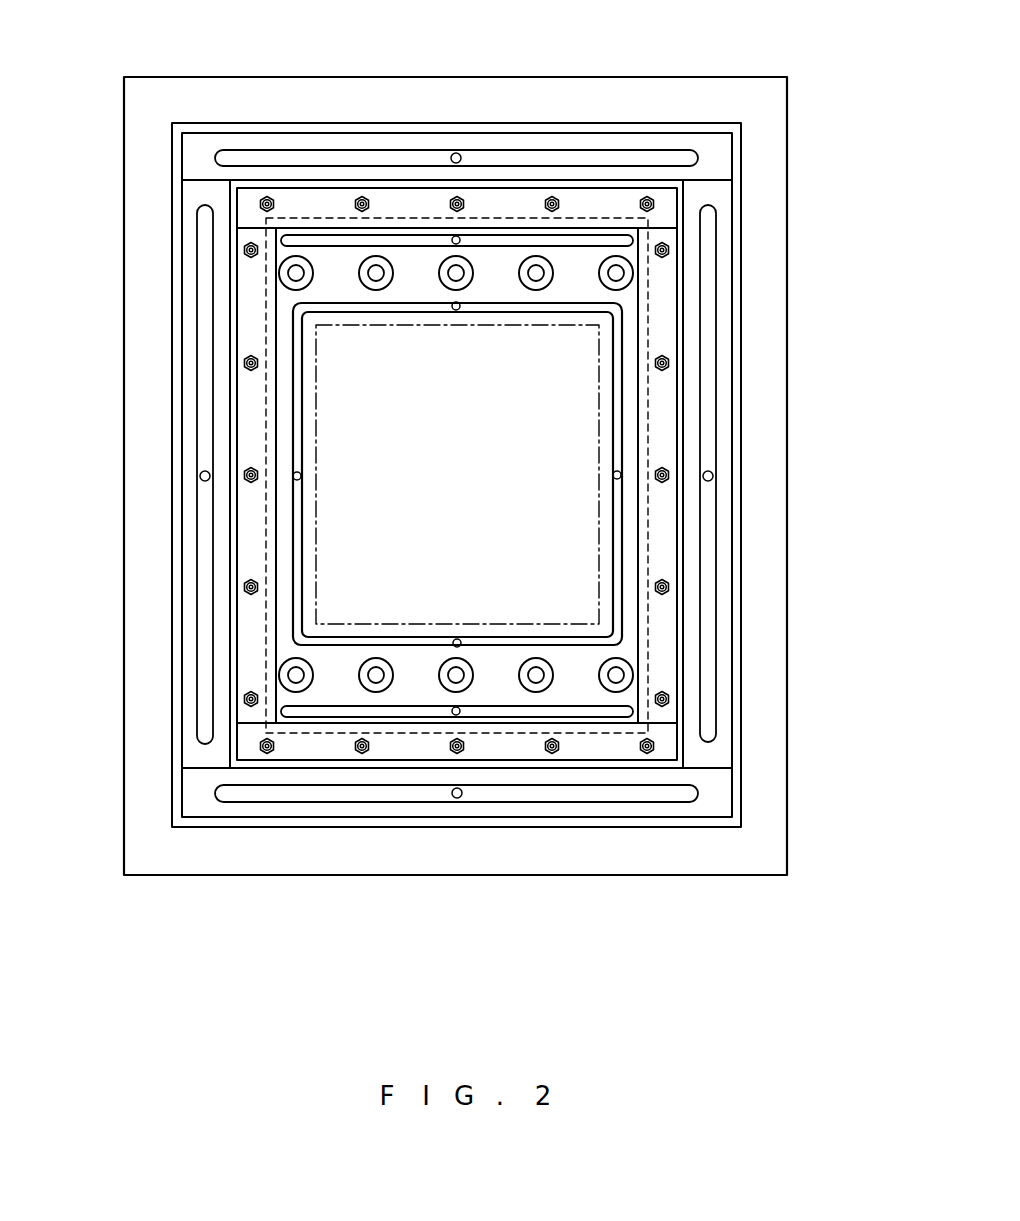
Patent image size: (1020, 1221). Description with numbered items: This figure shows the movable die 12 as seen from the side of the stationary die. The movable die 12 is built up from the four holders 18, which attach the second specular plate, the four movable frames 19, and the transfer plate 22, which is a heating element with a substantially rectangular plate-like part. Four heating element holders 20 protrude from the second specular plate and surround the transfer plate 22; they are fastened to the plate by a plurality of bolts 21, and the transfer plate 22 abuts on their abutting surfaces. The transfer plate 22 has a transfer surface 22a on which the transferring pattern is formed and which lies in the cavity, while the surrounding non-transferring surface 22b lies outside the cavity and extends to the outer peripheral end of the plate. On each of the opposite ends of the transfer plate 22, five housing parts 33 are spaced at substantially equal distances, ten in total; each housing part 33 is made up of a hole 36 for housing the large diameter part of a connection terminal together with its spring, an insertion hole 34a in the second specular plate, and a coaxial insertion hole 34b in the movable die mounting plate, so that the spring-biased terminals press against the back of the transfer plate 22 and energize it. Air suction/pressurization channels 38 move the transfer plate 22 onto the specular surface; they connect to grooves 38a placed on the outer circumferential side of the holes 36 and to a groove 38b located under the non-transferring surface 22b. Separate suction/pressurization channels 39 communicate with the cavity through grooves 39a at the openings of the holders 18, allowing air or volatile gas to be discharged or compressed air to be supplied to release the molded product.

The movable die 12 is at (797, 136).
The holder 18 is at (718, 153).
The movable frame 19 is at (638, 112).
The heating element holder 20 is at (308, 207).
The bolt 21 is at (263, 197).
The transfer plate 22 is at (510, 597).
The transfer surface 22a is at (558, 598).
The non-transferring surface 22b is at (487, 632).
The housing part 33 is at (535, 268).
The insertion hole 34a is at (520, 297).
The insertion hole 34b is at (457, 474).
The hole 36 is at (553, 270).
The air suction/pressurization channel 38 is at (453, 235).
The groove 38a is at (495, 237).
The groove 38b is at (382, 306).
The suction/pressurization channel 39 is at (455, 150).
The groove 39a is at (657, 157).